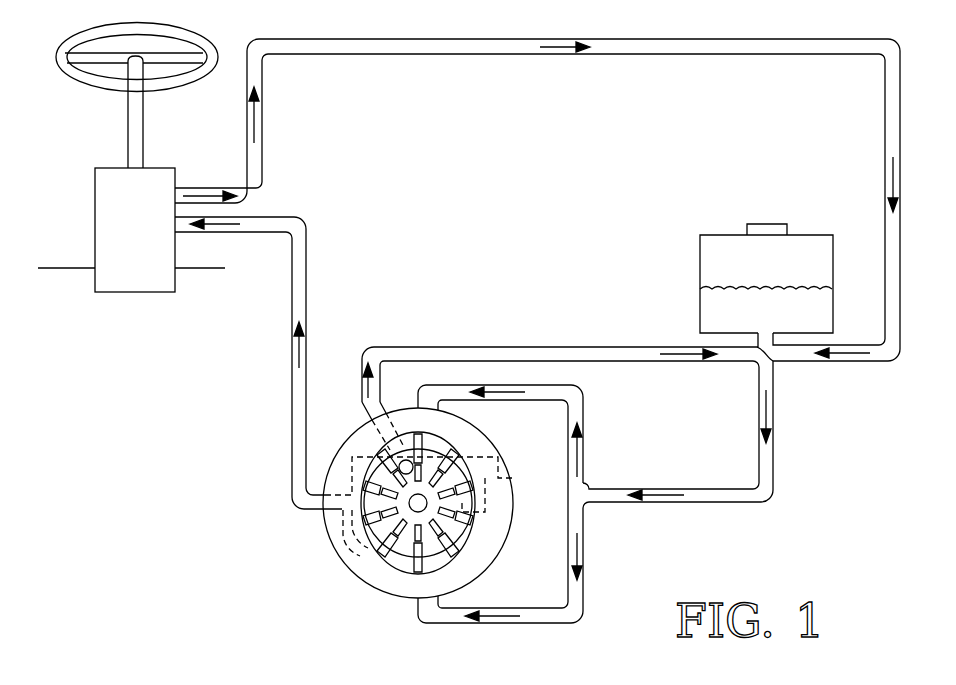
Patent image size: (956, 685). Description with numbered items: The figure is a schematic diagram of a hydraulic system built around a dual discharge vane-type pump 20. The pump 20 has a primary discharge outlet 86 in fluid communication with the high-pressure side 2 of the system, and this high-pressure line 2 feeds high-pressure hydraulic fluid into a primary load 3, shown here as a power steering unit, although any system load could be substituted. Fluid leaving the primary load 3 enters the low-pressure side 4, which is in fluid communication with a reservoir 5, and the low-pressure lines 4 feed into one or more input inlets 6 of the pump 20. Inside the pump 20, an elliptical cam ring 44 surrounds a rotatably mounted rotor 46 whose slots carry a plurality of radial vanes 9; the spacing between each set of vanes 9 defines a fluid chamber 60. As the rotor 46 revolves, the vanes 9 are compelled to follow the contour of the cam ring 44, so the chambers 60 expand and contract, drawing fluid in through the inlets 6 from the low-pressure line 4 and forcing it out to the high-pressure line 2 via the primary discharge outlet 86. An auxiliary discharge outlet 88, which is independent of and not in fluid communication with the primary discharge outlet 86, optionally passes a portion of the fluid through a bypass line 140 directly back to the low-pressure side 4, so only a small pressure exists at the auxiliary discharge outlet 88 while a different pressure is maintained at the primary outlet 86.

The high-pressure side 2 is at (292, 418).
The primary load 3 is at (127, 277).
The low-pressure side 4 is at (795, 358).
The reservoir 5 is at (724, 242).
The input inlets 6 is at (417, 402).
The radial vanes 9 is at (458, 522).
The vane-type pump 20 is at (385, 498).
The elliptical cam ring 44 is at (323, 520).
The rotor 46 is at (410, 495).
The fluid chamber 60 is at (402, 490).
The primary discharge outlet 86 is at (342, 546).
The auxiliary discharge outlet 88 is at (398, 452).
The bypass line 140 is at (495, 348).